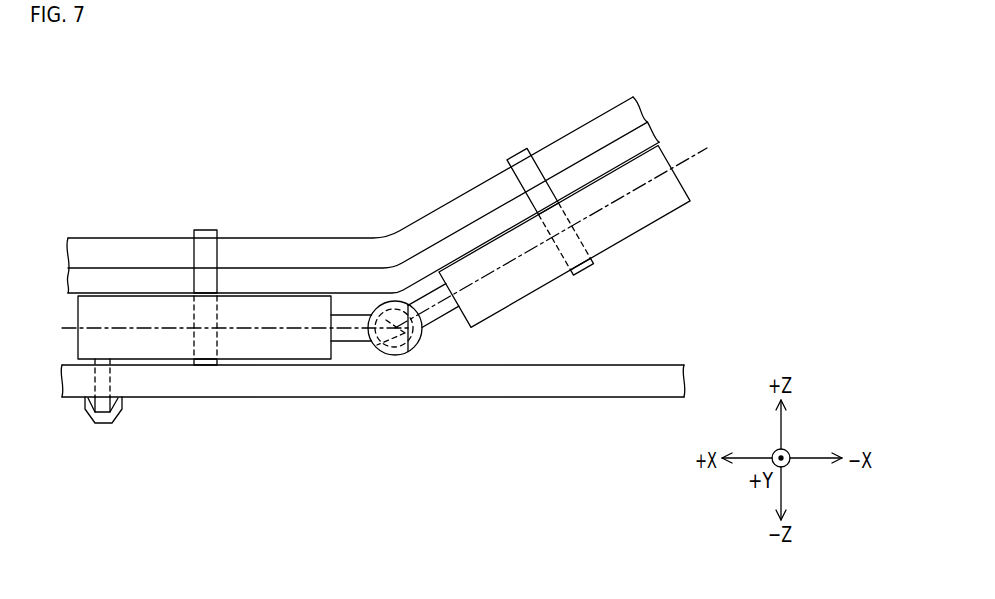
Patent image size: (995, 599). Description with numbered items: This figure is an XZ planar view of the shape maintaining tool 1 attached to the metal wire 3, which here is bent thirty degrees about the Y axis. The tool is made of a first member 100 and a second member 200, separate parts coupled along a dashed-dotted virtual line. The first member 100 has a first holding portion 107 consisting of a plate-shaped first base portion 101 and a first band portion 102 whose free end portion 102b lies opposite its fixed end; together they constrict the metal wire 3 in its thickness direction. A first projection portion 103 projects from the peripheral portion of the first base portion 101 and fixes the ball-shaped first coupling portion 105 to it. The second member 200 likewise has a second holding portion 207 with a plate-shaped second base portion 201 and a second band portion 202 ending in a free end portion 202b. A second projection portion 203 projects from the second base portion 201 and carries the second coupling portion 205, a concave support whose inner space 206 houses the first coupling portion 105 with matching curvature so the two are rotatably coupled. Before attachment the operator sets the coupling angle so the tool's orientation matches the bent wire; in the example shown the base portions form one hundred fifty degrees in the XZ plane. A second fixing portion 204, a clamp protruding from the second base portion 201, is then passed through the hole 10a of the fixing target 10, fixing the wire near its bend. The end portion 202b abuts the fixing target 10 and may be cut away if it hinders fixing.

The shape maintaining tool 1 is at (478, 448).
The metal wire 3 is at (635, 94).
The fixing target 10 is at (203, 398).
The hole 10a is at (118, 402).
The first member 100 is at (535, 260).
The first base portion 101 is at (497, 247).
The first band portion 102 is at (513, 152).
The end portion 102b is at (590, 262).
The first projection portion 103 is at (436, 300).
The first coupling portion 105 is at (408, 303).
The first holding portion 107 is at (551, 199).
The second member 200 is at (269, 301).
The second base portion 201 is at (147, 303).
The second band portion 202 is at (205, 236).
The end portion 202b is at (217, 362).
The second projection portion 203 is at (343, 314).
The second fixing portion 204 is at (88, 412).
The second coupling portion 205 is at (380, 309).
The inner space 206 is at (410, 340).
The second holding portion 207 is at (235, 250).